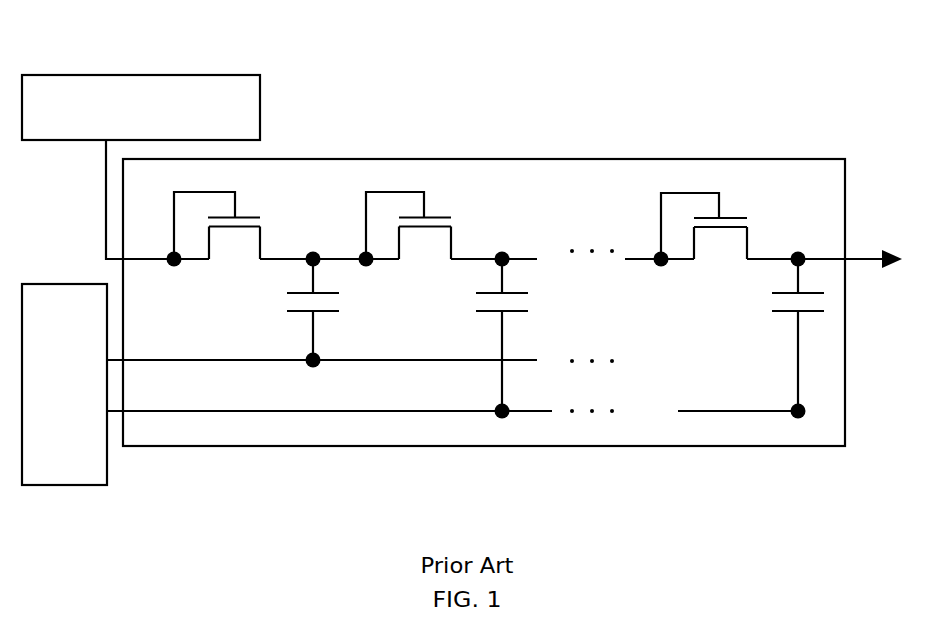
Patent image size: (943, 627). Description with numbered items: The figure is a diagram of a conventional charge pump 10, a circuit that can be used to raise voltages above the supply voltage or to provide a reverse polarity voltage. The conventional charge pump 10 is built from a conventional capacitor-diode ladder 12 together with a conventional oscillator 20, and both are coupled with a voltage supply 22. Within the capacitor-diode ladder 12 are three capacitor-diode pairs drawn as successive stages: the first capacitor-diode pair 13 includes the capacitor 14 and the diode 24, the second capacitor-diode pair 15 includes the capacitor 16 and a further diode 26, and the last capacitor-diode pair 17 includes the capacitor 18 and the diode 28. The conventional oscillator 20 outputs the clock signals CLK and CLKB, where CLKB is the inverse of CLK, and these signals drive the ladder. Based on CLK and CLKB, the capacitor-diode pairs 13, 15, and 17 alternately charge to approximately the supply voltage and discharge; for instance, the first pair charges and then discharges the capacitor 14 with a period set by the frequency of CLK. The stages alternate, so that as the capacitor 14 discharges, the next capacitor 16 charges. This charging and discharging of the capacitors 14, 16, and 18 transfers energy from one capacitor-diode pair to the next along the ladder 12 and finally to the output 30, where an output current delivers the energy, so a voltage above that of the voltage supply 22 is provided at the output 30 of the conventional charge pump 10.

The conventional charge pump 10 is at (453, 36).
The conventional capacitor-diode ladder 12 is at (585, 159).
The capacitor-diode pair 13 is at (296, 328).
The capacitor 14 is at (336, 346).
The capacitor-diode pair 15 is at (483, 328).
The capacitor 16 is at (519, 346).
The capacitor-diode pair 17 is at (735, 333).
The capacitor 18 is at (777, 348).
The conventional oscillator 20 is at (45, 485).
The voltage supply 22 is at (262, 100).
The diode 24 is at (270, 175).
The second diode-connected transistor 26 is at (450, 175).
The diode 28 is at (743, 176).
The output 30 is at (855, 258).